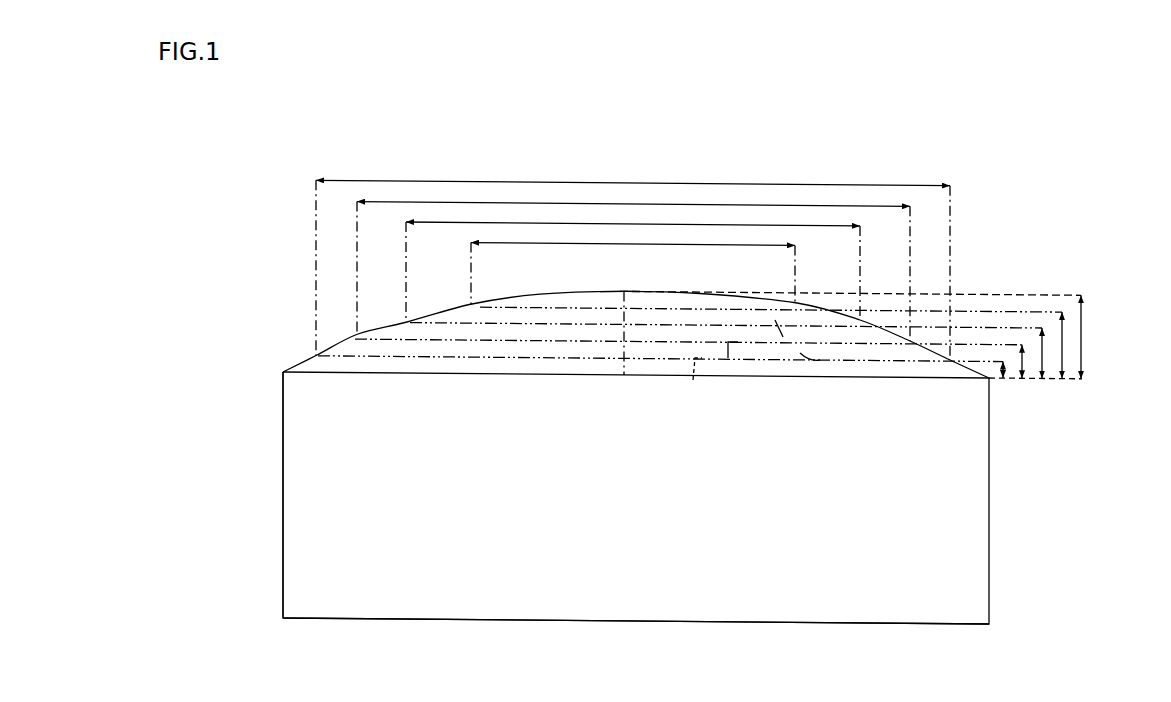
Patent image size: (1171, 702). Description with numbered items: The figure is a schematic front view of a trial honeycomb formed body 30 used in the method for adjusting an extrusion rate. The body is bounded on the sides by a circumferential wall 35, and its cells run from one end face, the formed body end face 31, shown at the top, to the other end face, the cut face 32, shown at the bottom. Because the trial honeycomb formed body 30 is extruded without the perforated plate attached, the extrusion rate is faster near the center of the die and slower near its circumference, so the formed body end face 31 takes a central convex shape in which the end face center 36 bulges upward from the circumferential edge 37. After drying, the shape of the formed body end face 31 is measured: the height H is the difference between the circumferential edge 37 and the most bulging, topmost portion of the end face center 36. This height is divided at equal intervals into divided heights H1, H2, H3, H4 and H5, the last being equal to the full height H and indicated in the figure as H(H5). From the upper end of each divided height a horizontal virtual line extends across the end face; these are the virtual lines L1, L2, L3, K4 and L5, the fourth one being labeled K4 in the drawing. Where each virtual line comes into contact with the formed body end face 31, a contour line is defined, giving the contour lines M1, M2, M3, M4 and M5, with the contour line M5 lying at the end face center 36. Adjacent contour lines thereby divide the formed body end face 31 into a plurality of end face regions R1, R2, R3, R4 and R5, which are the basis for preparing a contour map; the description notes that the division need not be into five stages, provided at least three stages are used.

The trial honeycomb formed body 30 is at (668, 168).
The formed body end face 31 is at (385, 328).
The cut face 32 is at (685, 623).
The circumferential wall 35 is at (292, 507).
The end face center 36 is at (620, 291).
The circumferential edge 37 is at (337, 375).
The end face region R1 is at (440, 365).
The end face region R2 is at (513, 347).
The end face region R3 is at (447, 330).
The end face region R4 is at (508, 317).
The end face region R5 is at (600, 298).
The virtual line L1 is at (970, 360).
The virtual line L2 is at (993, 343).
The virtual line L3 is at (1022, 328).
The fourth level line K4 is at (1033, 313).
The virtual line L5 is at (1060, 295).
The divided height H1 is at (1005, 380).
The divided height H2 is at (1022, 362).
The divided height H3 is at (1060, 368).
The divided height H4 is at (1062, 362).
The divided height H5 is at (1082, 327).
The contour line M1 is at (693, 380).
The contour line M2 is at (737, 378).
The contour line M3 is at (780, 378).
The contour line M4 is at (826, 378).
The contour line M5 is at (624, 385).